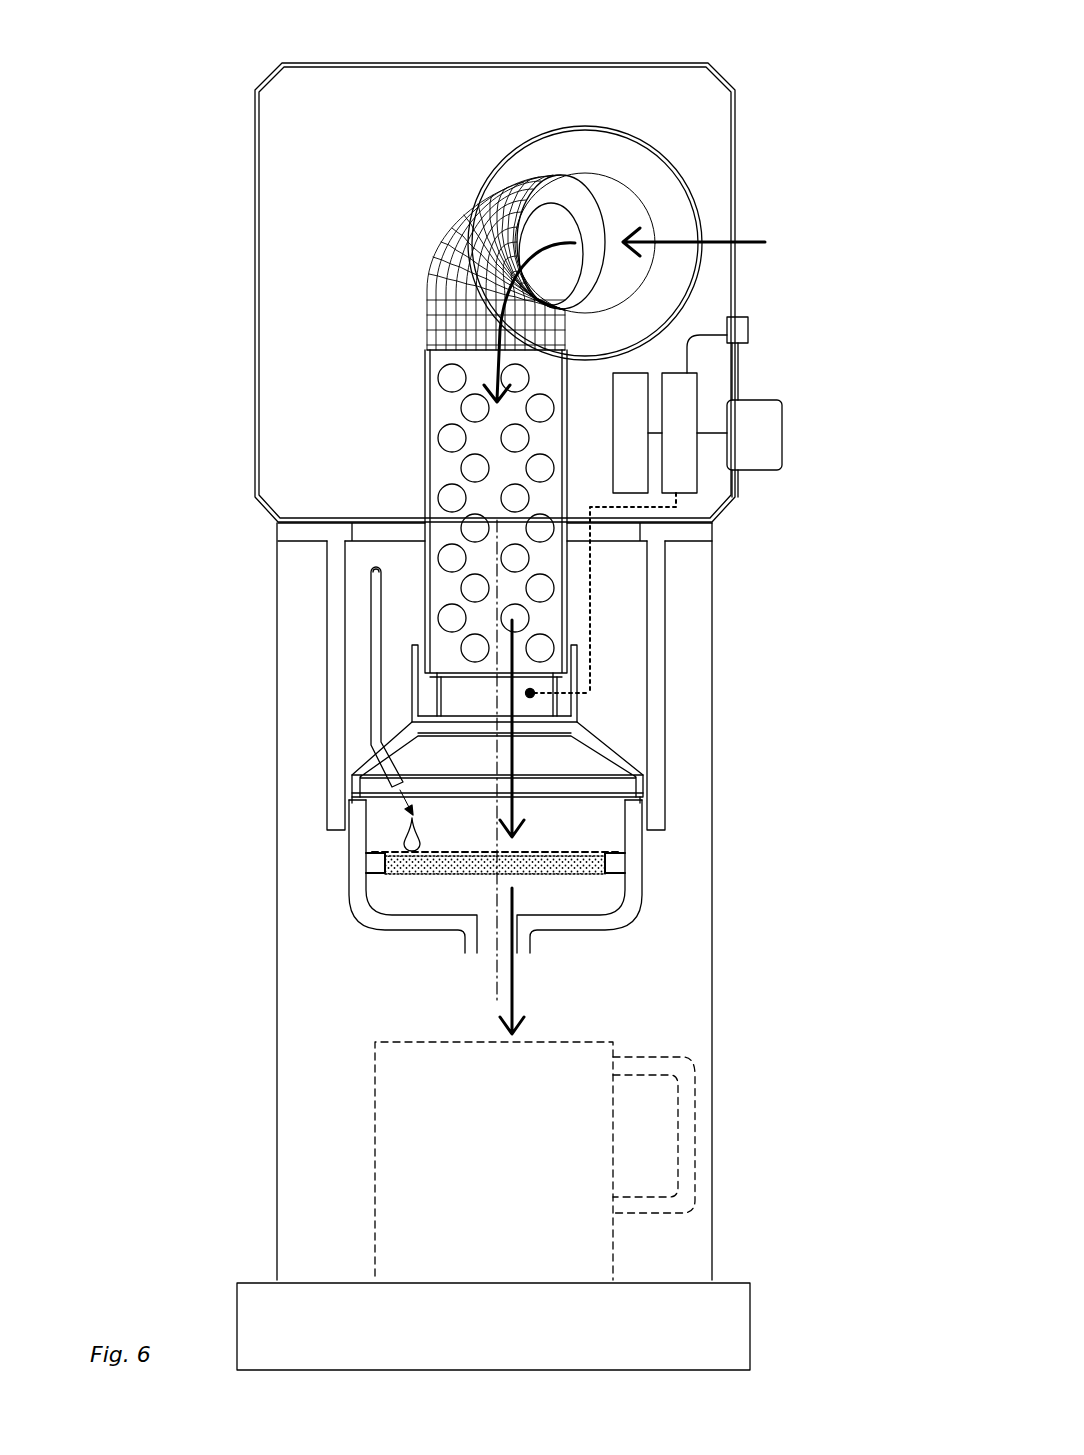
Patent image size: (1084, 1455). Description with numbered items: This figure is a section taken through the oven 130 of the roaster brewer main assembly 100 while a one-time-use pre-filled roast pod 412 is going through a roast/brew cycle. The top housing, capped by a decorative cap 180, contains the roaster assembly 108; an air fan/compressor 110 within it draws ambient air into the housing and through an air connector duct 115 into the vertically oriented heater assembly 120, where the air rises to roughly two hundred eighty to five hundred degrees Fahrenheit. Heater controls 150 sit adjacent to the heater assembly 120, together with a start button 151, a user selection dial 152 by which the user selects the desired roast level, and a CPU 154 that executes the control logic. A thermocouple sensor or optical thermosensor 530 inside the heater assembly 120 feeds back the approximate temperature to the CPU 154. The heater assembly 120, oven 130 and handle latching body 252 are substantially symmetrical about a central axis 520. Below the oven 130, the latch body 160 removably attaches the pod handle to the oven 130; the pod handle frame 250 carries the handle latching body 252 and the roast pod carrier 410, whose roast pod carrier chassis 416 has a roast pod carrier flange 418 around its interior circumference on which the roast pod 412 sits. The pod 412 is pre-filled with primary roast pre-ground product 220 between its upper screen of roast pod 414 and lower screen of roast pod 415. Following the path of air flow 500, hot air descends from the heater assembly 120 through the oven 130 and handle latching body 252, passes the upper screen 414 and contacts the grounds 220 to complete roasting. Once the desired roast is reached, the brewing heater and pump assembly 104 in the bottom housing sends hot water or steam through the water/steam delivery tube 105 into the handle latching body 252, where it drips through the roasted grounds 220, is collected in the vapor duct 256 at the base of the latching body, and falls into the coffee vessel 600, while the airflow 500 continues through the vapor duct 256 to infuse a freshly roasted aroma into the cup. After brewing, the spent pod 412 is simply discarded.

The roaster brewer main assembly 100 is at (770, 66).
The brewing heater and pump assembly 104 is at (353, 666).
The water/steam delivery tube 105 is at (375, 615).
The roaster assembly 108 is at (738, 497).
The air fan/compressor 110 is at (684, 186).
The air connector duct 115 is at (427, 285).
The heater assembly 120 is at (567, 573).
The oven 130 is at (612, 750).
The heater controls 150 is at (643, 398).
The start button 151 is at (749, 333).
The user selection dial 152 is at (748, 432).
The CPU 154 is at (682, 450).
The latch body 160 is at (665, 578).
The decorative cap 180 is at (566, 63).
The primary roast pre-ground product 220 is at (627, 866).
The pod handle frame 250 is at (662, 883).
The handle latching body 252 is at (349, 877).
The vapor duct at base of handle latching body 256 is at (485, 938).
The roast pod carrier 410 is at (396, 819).
The roast pod 412 is at (595, 856).
The upper screen of roast pod 414 is at (583, 852).
The lower screen of roast pod 415 is at (606, 870).
The roast pod carrier chassis 416 is at (362, 831).
The roast pod carrier flange 418 is at (378, 876).
The path of air flow 500 is at (565, 250).
The central axis 520 is at (495, 711).
The thermocouple sensor or optical thermosensor 530 is at (537, 692).
The coffee vessel 600 is at (370, 1118).